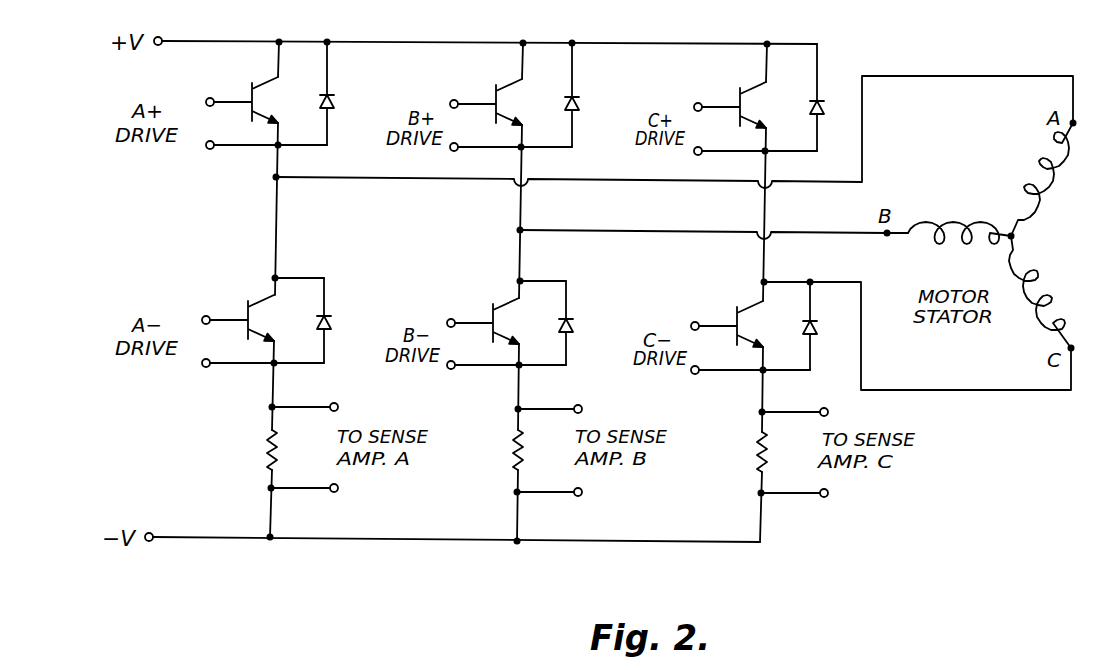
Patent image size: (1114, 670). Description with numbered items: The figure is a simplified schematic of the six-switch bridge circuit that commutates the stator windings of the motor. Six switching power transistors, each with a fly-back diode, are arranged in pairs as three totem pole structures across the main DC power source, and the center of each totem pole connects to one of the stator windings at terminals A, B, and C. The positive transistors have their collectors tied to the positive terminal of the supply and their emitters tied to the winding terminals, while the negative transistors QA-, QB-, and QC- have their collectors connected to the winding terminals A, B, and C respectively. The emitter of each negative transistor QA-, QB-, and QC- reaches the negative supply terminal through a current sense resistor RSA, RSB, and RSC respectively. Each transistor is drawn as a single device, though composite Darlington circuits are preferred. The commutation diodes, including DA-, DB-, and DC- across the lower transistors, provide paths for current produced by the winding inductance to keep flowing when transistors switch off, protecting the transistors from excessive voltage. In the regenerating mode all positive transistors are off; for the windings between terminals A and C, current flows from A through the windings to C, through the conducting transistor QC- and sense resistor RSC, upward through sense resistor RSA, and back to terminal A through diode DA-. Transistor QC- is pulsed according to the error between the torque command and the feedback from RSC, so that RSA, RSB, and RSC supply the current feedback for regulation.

The negative transistor QA- is at (252, 318).
The negative transistor QB- is at (497, 321).
The negative transistor QC- is at (738, 324).
The fly-back diode DA- is at (347, 320).
The fly-back diode DB- is at (589, 323).
The fly-back diode DC- is at (828, 326).
The current sense resistor RSA is at (246, 449).
The current sense resistor RSB is at (492, 450).
The current sense resistor RSC is at (737, 452).